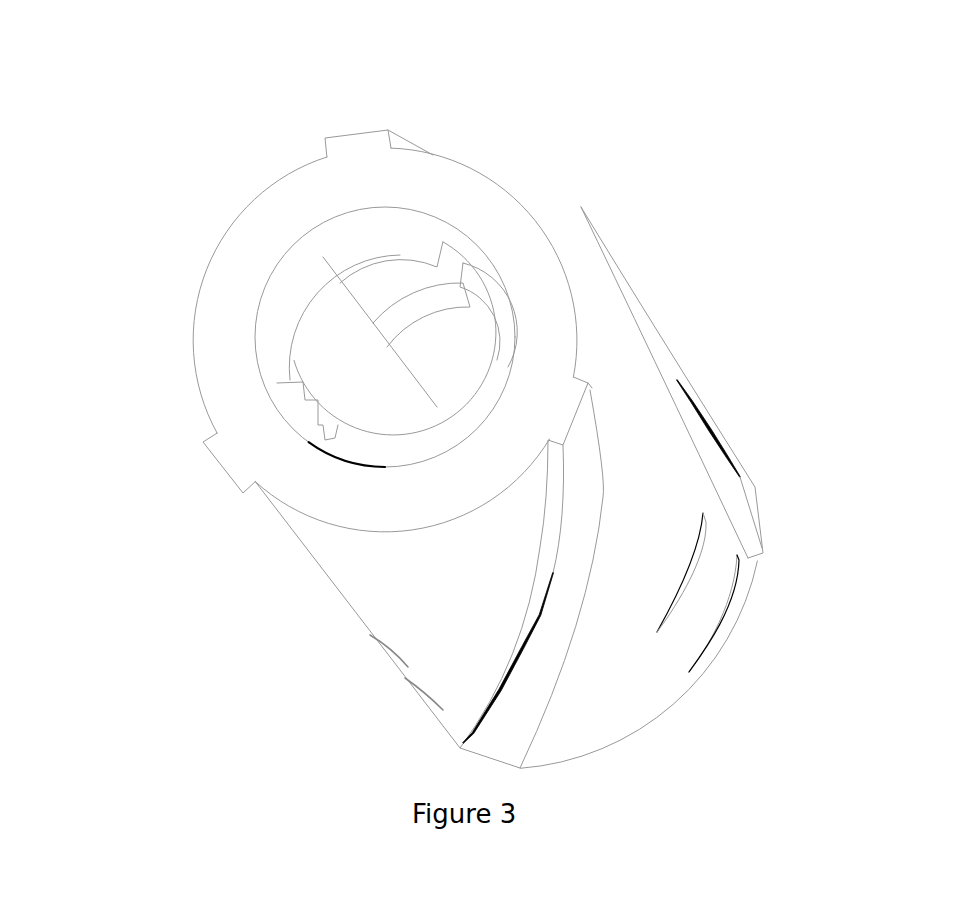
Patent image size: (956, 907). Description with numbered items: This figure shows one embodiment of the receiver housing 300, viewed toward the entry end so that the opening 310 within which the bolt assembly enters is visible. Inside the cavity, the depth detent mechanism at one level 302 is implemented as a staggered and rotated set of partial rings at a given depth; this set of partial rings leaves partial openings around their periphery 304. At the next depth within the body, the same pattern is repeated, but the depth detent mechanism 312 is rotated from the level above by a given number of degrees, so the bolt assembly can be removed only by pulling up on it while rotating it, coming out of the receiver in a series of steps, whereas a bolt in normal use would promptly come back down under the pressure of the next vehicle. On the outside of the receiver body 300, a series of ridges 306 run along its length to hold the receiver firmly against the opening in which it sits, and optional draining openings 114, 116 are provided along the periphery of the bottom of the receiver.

The receiver housing 300 is at (225, 198).
The opening 310 is at (232, 307).
The partial openings around periphery 304 is at (292, 293).
The depth detent mechanism 312 is at (323, 320).
The depth detent mechanism at one level 302 is at (387, 252).
The ridges 306 is at (528, 566).
The opening 116 is at (697, 580).
The opening 114 is at (730, 630).